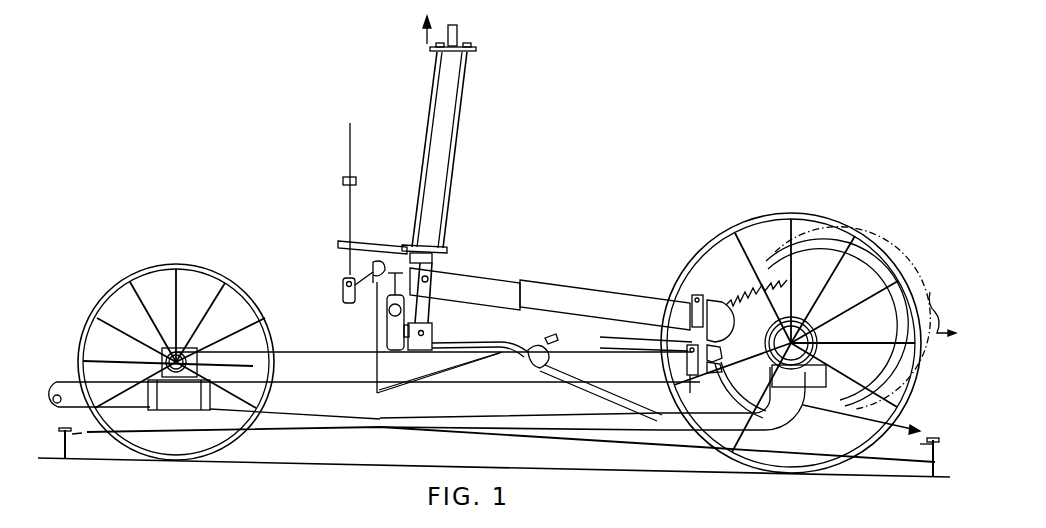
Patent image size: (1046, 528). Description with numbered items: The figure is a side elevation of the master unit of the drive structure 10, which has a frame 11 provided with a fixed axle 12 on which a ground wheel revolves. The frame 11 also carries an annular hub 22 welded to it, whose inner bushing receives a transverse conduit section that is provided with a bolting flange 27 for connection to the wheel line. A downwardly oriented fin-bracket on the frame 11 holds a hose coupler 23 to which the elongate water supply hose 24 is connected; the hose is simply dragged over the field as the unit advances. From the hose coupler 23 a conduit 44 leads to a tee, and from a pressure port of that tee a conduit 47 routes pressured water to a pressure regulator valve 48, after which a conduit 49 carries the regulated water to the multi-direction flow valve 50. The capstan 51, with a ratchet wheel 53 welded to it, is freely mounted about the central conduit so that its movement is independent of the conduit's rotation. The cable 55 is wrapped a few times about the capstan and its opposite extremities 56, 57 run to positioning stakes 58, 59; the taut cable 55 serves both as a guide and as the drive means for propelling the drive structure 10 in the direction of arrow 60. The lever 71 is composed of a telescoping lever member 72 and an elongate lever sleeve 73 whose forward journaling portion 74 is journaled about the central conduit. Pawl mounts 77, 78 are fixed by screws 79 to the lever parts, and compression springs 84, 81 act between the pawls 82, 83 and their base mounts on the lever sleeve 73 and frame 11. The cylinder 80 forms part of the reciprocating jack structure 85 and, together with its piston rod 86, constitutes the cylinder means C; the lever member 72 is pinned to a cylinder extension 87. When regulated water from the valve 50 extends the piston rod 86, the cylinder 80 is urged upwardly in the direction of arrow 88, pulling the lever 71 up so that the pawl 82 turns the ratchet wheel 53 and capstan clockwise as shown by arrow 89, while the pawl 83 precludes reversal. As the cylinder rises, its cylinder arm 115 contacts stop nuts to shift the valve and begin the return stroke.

The drive structure 10 is at (321, 362).
The frame 11 is at (294, 350).
The fixed axle 12 is at (182, 340).
The annular hub 22 is at (200, 370).
The hose coupler 23 is at (187, 410).
The water supply hose 24 is at (66, 380).
The bolting flange 27 is at (670, 388).
The conduit 44 is at (248, 400).
The conduit 47 is at (660, 418).
The pressure regulator valve 48 is at (532, 370).
The conduit 49 is at (492, 343).
The multi-direction flow valve 50 is at (398, 350).
The capstan 51 is at (866, 271).
The ratchet wheel 53 is at (850, 305).
The cable 55 is at (901, 319).
The cable extremity 56 is at (855, 414).
The cable extremity 57 is at (165, 446).
The positioning stake 58 is at (928, 455).
The positioning stake 59 is at (68, 440).
The arrow 60 is at (935, 305).
The lever 71 is at (563, 280).
The telescoping lever member 72 is at (490, 278).
The elongate lever sleeve 73 is at (622, 300).
The journaling portion 74 is at (640, 349).
The pawl mount 77 is at (686, 362).
The pawl mount 78 is at (690, 312).
The screws 79 is at (665, 338).
The cylinder 80 is at (442, 176).
The compression spring 81 is at (722, 368).
The pawl 82 is at (722, 298).
The pawl 83 is at (724, 348).
The compression spring 84 is at (728, 318).
The reciprocating jack structure 85 is at (472, 88).
The piston rod 86 is at (433, 306).
The cylinder extension 87 is at (440, 258).
The arrow 88 is at (425, 30).
The arrow 89 is at (843, 338).
The cylinder arm 115 is at (377, 250).
The cylinder means C is at (452, 137).